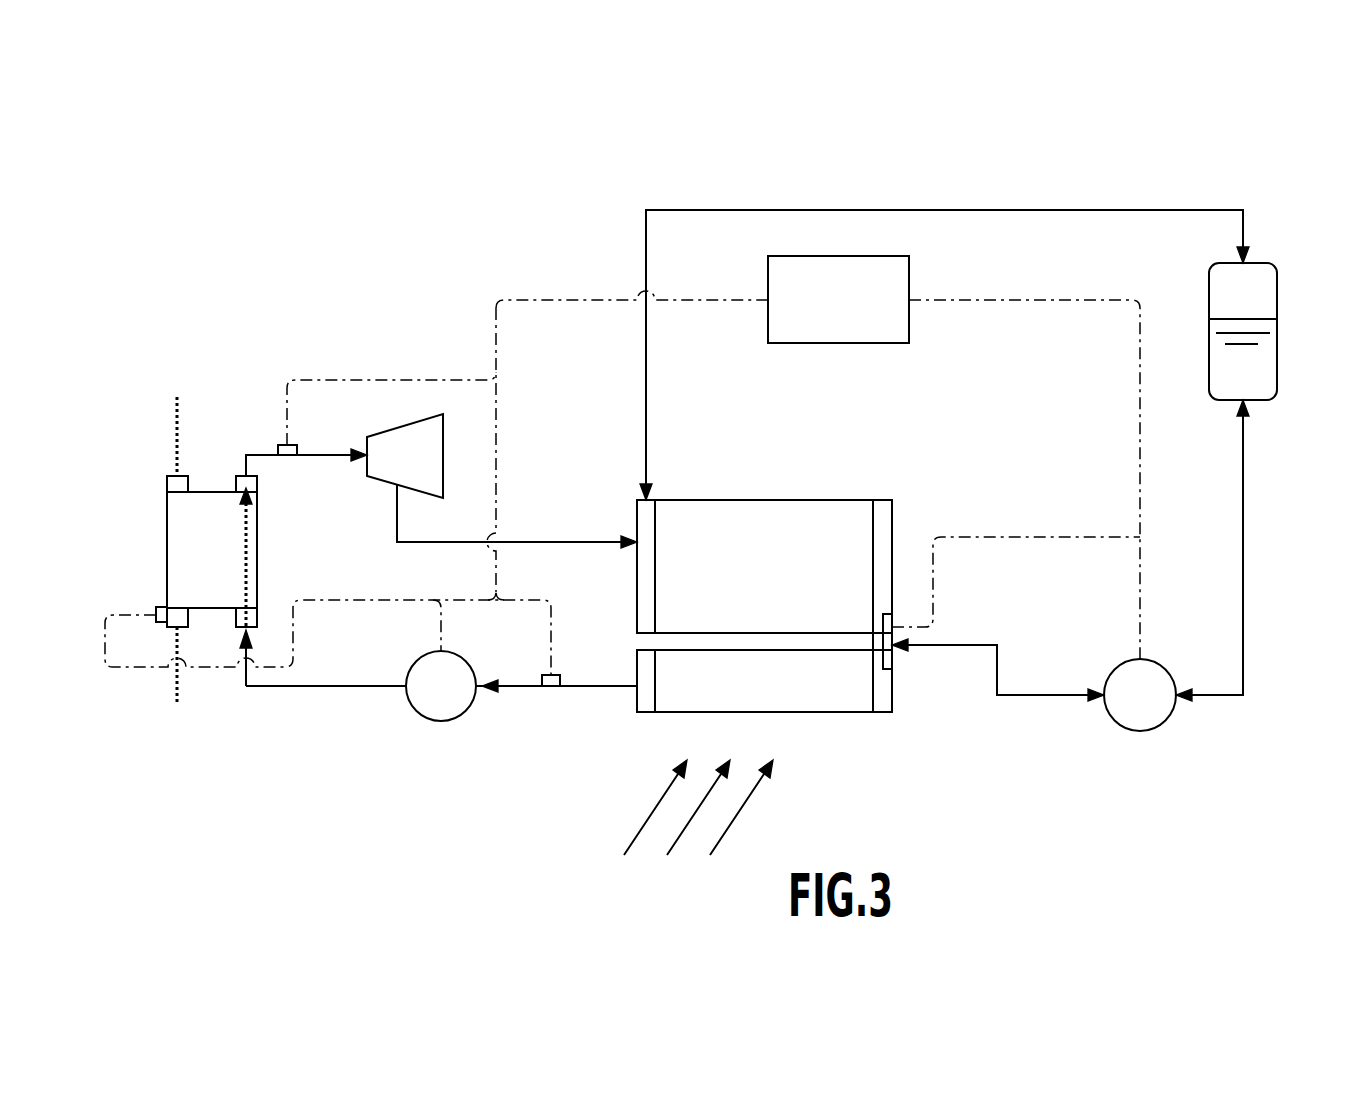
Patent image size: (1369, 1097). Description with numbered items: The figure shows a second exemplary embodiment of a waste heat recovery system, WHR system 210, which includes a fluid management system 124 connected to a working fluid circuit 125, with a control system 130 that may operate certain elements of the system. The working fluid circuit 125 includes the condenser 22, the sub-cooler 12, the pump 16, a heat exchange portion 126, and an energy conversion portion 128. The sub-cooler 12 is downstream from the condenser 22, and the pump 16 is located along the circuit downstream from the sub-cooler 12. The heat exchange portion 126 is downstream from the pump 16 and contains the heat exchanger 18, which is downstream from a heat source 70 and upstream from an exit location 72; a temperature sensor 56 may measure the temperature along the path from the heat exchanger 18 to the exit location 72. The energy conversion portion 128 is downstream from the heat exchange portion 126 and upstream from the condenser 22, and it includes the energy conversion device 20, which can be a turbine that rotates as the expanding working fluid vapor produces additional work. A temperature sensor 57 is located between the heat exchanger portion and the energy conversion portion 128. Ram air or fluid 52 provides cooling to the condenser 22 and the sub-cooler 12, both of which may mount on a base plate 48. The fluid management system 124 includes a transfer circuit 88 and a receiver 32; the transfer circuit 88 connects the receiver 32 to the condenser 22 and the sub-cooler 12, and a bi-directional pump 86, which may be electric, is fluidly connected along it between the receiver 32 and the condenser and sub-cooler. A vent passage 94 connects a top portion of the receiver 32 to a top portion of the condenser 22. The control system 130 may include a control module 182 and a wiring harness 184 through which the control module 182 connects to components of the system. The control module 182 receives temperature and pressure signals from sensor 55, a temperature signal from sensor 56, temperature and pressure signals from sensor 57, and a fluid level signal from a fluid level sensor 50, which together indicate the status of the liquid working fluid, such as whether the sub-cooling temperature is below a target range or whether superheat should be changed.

The sub-cooler 12 is at (800, 712).
The pump 16 is at (430, 721).
The heat exchanger 18 is at (167, 540).
The energy conversion device 20 is at (371, 478).
The condenser 22 is at (757, 500).
The receiver 32 is at (1277, 290).
The base plate 48 is at (888, 712).
The fluid level sensor 50 is at (895, 668).
The ram air or fluid 52 is at (608, 822).
The sensor 55 is at (560, 675).
The temperature sensor 56 is at (156, 612).
The temperature sensor 57 is at (283, 442).
The heat source 70 is at (185, 395).
The exit location 72 is at (185, 708).
The bi-directional pump 86 is at (1160, 728).
The transfer circuit 88 is at (1270, 742).
The vent passage 94 is at (1128, 208).
The fluid management system 124 is at (1045, 770).
The working fluid circuit 125 is at (419, 303).
The heat exchange portion 126 is at (137, 372).
The energy conversion portion 128 is at (386, 400).
The control system 130 is at (938, 380).
The control module 182 is at (852, 314).
The wiring harness 184 is at (560, 300).
The WHR system 210 is at (1288, 178).